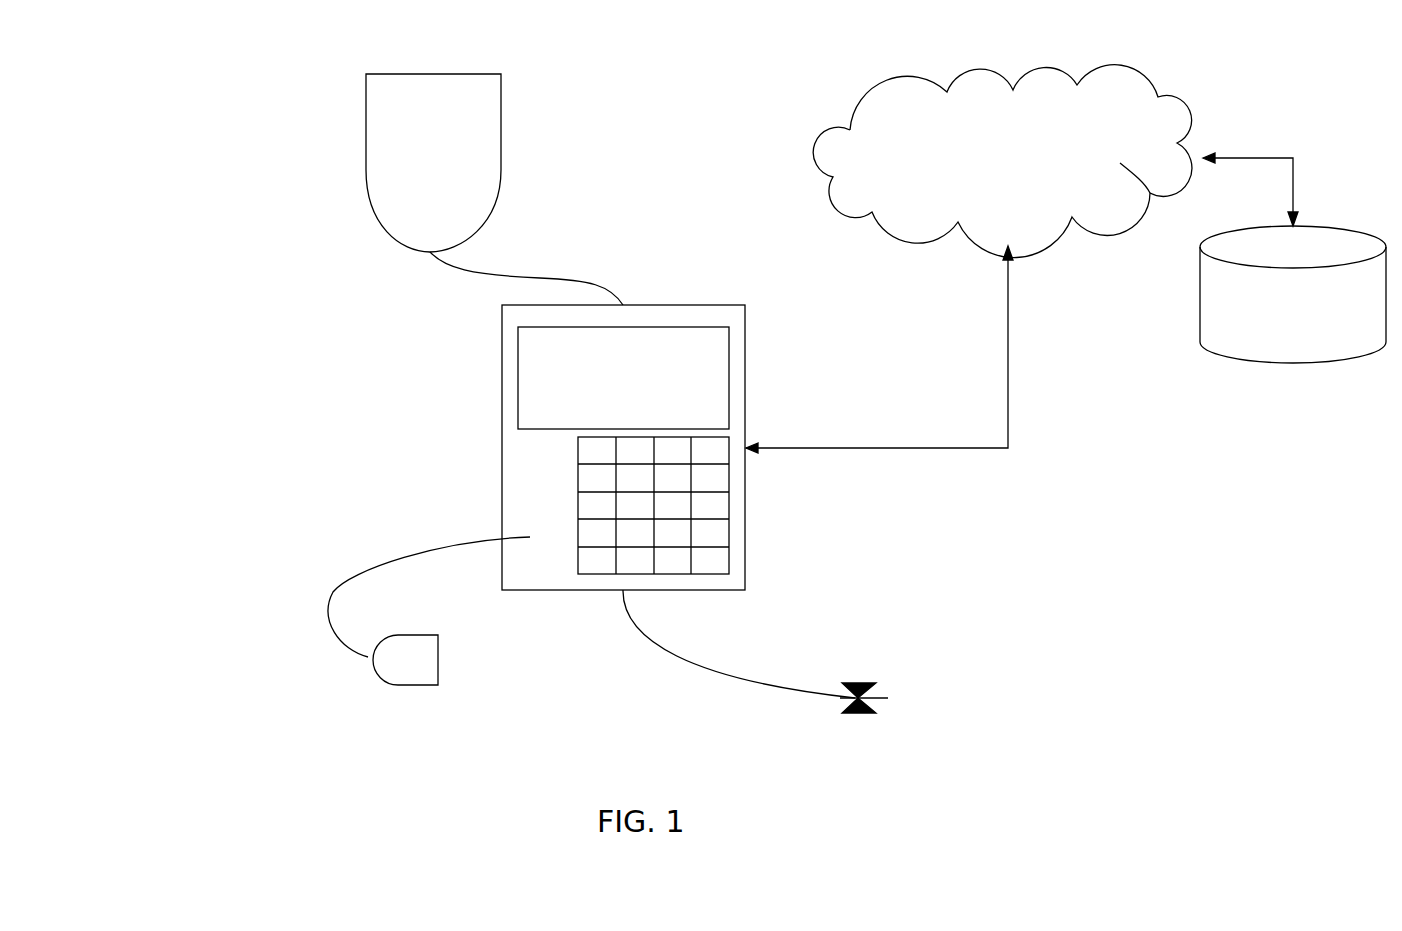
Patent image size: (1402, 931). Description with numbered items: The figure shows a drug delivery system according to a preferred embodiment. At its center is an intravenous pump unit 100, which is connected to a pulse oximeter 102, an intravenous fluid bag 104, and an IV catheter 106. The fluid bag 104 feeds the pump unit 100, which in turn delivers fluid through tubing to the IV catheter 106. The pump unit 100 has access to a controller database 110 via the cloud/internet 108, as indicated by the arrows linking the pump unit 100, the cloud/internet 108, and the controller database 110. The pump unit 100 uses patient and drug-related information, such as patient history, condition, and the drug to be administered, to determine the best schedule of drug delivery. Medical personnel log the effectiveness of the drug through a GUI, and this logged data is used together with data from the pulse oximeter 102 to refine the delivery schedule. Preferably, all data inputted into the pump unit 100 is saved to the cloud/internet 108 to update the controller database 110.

The intravenous (IV) pump unit 100 is at (713, 322).
The pulse oximeter 102 is at (403, 670).
The intravenous (IV) fluid bag 104 is at (396, 91).
The IV catheter 106 is at (857, 715).
The cloud/internet 108 is at (975, 93).
The controller database 110 is at (1352, 340).